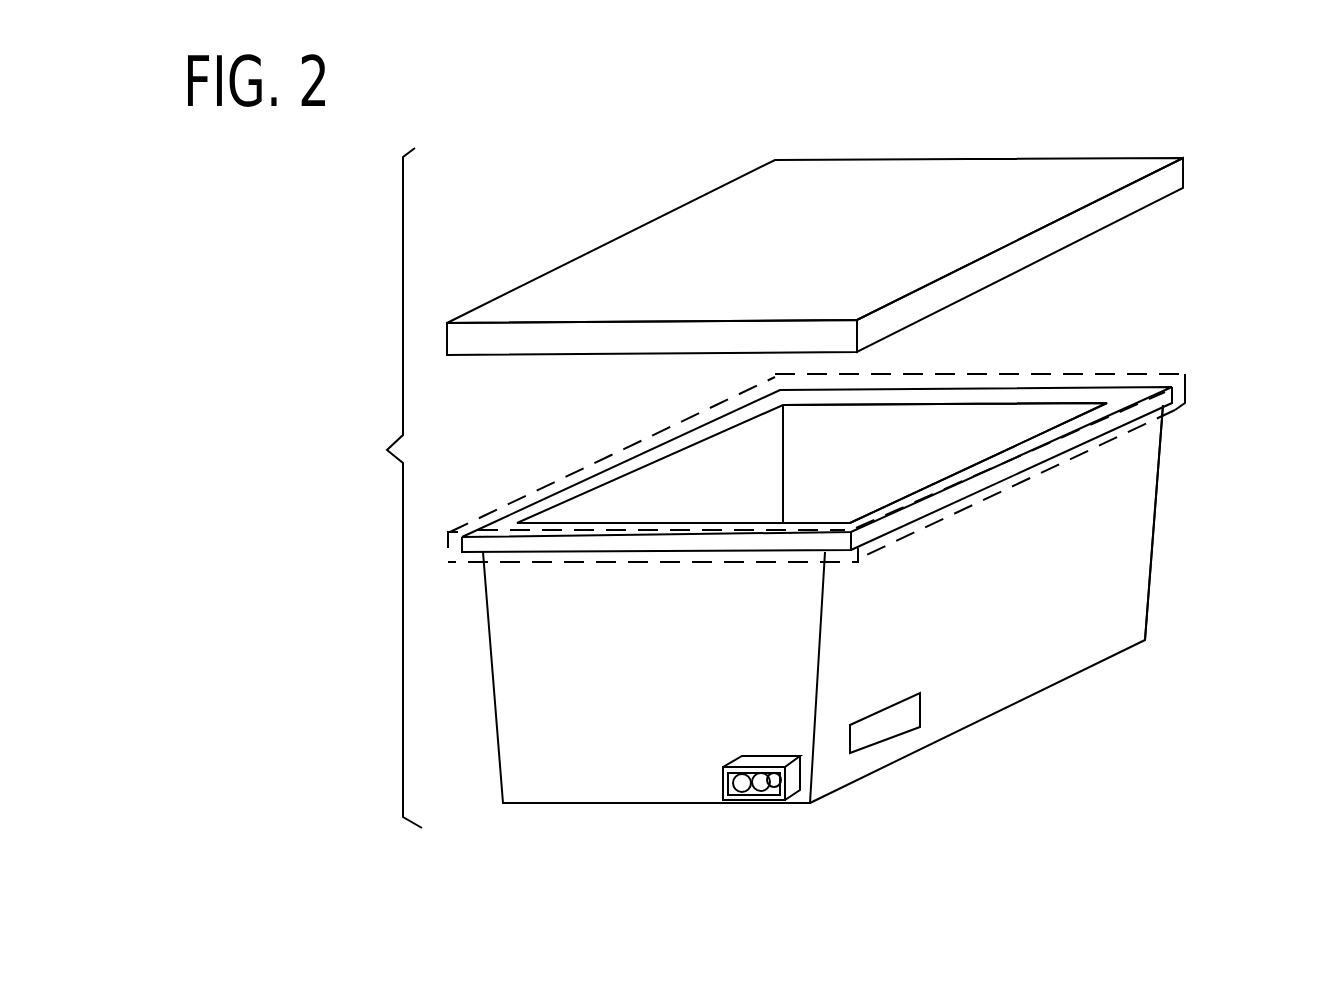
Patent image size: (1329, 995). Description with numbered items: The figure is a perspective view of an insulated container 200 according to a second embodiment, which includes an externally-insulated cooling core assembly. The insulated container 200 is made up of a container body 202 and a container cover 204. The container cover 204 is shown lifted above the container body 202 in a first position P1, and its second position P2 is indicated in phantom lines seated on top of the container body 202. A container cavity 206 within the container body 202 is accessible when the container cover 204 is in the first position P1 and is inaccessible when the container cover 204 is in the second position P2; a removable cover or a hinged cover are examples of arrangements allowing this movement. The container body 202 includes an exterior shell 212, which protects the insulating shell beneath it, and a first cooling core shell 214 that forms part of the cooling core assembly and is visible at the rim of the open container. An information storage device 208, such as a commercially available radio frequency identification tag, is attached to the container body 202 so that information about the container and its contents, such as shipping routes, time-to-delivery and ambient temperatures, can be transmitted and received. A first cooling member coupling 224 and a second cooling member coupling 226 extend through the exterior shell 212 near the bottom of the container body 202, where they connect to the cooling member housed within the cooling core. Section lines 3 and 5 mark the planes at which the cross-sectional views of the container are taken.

The insulated container 200 is at (359, 488).
The container body 202 is at (1153, 495).
The container cover 204 is at (975, 157).
The container cavity 206 is at (967, 428).
The information storage device 208 is at (890, 730).
The exterior shell 212 is at (1127, 587).
The first cooling core shell 214 is at (650, 483).
The first cooling member coupling 224 is at (747, 795).
The second cooling member coupling 226 is at (762, 778).
The first position P1 is at (1178, 145).
The second position P2 is at (1196, 360).
The section line 3- 3 is at (415, 653).
The section line 5- 5 is at (757, 839).